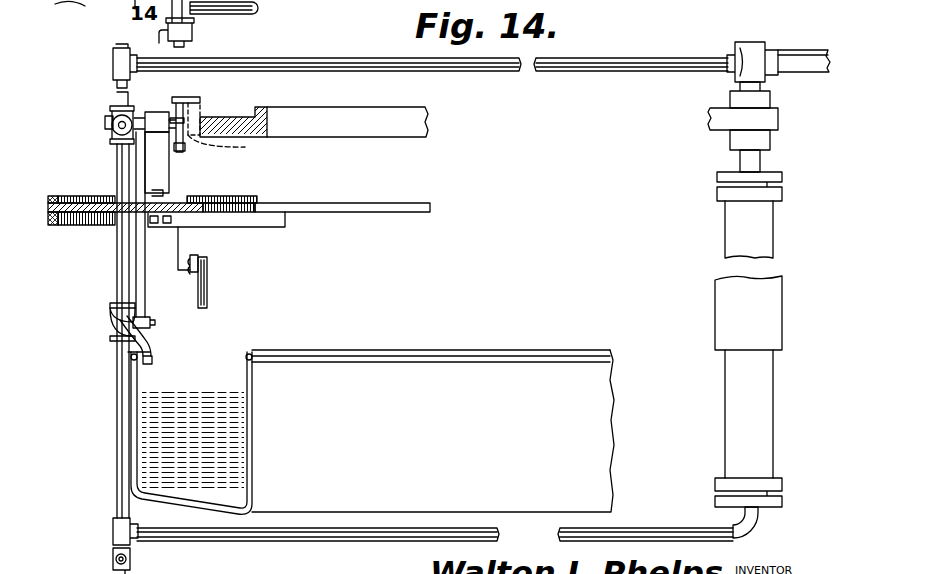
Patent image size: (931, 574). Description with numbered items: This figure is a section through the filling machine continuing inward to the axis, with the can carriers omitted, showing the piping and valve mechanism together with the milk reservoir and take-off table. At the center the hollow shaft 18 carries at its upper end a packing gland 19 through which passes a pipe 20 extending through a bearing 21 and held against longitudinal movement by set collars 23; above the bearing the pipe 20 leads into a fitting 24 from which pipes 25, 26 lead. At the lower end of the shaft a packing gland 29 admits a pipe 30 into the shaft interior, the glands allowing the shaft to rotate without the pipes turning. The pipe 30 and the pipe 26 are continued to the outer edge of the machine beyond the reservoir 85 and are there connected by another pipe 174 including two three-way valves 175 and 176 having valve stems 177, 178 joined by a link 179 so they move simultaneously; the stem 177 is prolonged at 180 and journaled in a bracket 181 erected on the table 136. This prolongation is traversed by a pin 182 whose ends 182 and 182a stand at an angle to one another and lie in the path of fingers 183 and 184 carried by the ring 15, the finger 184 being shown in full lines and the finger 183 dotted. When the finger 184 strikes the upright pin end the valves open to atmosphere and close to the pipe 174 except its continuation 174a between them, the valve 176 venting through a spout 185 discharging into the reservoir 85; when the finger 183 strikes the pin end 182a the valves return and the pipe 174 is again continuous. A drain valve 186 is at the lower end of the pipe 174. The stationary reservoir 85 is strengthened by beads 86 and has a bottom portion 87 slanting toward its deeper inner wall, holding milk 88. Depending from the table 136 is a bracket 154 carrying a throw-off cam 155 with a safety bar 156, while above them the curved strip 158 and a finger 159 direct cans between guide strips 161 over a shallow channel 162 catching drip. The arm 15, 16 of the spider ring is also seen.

The ring 15 is at (366, 137).
The arm upper portion 16 is at (369, 108).
The hollow shaft 18 is at (782, 307).
The packing gland 19 is at (783, 189).
The pipe 20 is at (762, 161).
The bearing 21 is at (778, 119).
The set collars 23 is at (745, 101).
The fitting 24 is at (748, 55).
The pipe 25 is at (800, 55).
The pipe 26 is at (612, 72).
The packing gland 29 is at (783, 487).
The pipe 30 is at (250, 14).
The reservoir 85 is at (433, 431).
The beads 86 is at (386, 352).
The bottom portion 87 is at (183, 503).
The milk 88 is at (191, 433).
The table 136 is at (62, 226).
The bracket 154 is at (183, 242).
The throw-off cam 155 is at (200, 263).
The safety bar 156 is at (208, 285).
The curved strip 158 is at (200, 193).
The finger 159 is at (260, 199).
The guide strips 161 is at (100, 197).
The shallow channel 162 is at (52, 228).
The pipe 174 is at (116, 418).
The pipe continuation 174a is at (116, 283).
The valve 175 is at (108, 122).
The valve 176 is at (108, 322).
The valve stem 177 is at (148, 112).
The valve stem 178 is at (152, 323).
The link 179 is at (156, 280).
The stem prolongation 180 is at (200, 103).
The bracket 181 is at (158, 170).
The pin 182 is at (180, 98).
The pin end 182a is at (188, 150).
The finger 183 is at (231, 147).
The finger 184 is at (200, 100).
The spout 185 is at (153, 361).
The drain valve 186 is at (190, 36).